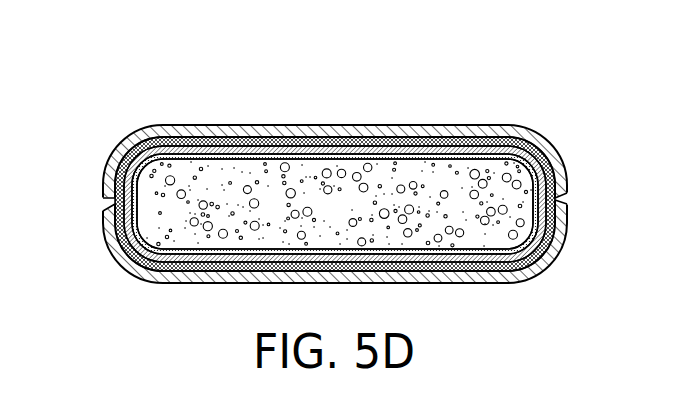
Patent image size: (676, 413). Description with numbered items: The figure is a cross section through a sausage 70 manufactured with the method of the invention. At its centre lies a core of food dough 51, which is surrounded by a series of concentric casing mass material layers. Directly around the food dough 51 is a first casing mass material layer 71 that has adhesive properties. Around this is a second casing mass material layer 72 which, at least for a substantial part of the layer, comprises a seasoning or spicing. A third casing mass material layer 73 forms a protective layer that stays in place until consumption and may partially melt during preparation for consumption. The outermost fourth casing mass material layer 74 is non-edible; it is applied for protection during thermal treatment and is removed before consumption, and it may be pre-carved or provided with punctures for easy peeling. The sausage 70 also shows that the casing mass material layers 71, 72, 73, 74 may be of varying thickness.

The sausage 70 is at (110, 78).
The first casing mass material layer 71 is at (252, 158).
The second casing mass material layer 72 is at (310, 152).
The third casing mass material layer 73 is at (358, 145).
The fourth nonedible casing mass material layer 74 is at (407, 132).
The food dough 51 is at (322, 217).